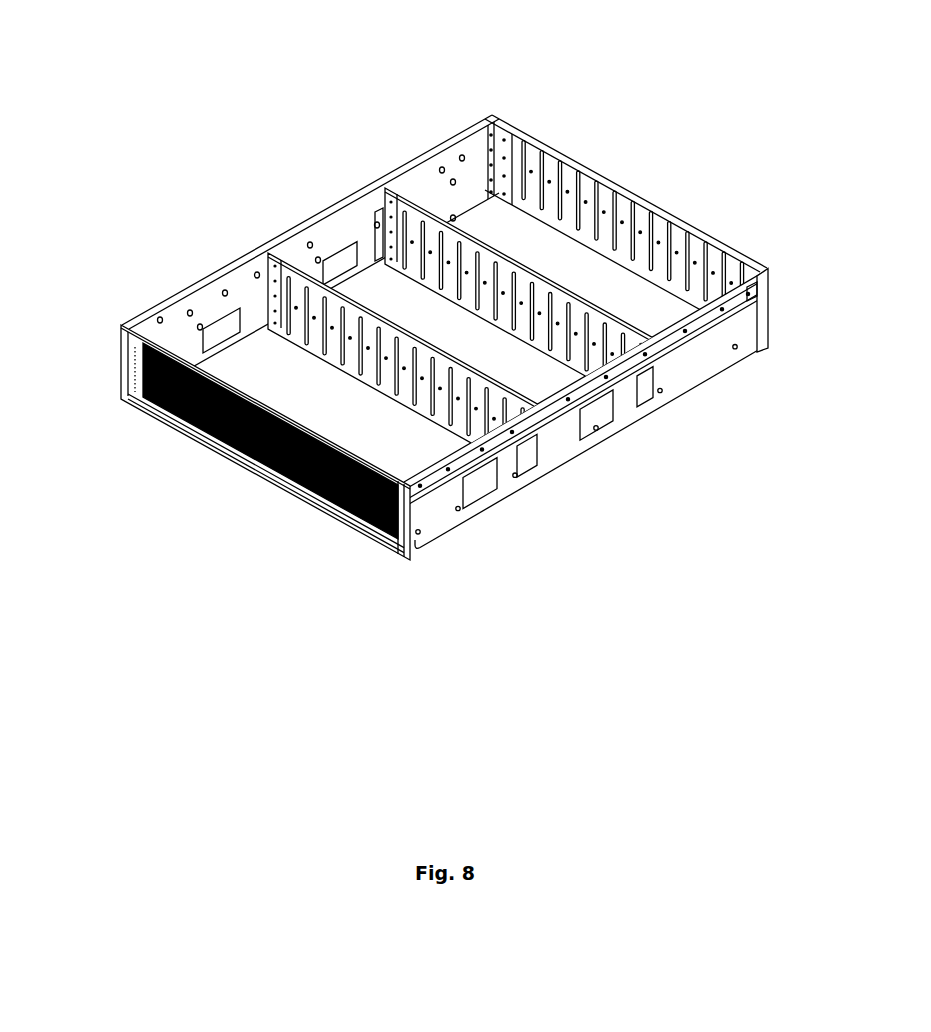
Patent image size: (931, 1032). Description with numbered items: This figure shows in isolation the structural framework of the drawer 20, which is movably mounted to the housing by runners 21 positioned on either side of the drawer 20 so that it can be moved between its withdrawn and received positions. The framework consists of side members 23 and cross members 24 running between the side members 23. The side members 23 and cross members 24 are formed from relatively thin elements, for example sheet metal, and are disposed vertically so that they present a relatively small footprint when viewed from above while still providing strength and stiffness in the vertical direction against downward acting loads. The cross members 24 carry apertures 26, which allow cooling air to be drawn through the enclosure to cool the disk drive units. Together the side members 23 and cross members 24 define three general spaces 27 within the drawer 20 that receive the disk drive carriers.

The drawer 20 is at (741, 49).
The runner 21 is at (750, 292).
The side member 23 is at (182, 325).
The cross member 24 is at (466, 233).
The aperture 26 is at (623, 207).
The general space 27 is at (587, 272).